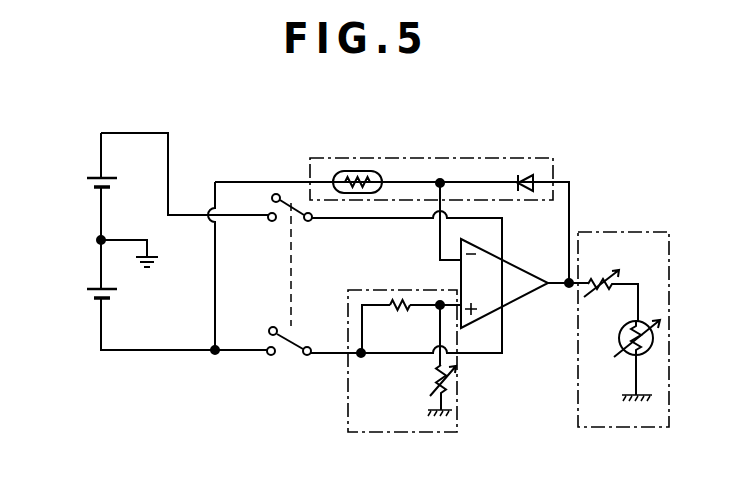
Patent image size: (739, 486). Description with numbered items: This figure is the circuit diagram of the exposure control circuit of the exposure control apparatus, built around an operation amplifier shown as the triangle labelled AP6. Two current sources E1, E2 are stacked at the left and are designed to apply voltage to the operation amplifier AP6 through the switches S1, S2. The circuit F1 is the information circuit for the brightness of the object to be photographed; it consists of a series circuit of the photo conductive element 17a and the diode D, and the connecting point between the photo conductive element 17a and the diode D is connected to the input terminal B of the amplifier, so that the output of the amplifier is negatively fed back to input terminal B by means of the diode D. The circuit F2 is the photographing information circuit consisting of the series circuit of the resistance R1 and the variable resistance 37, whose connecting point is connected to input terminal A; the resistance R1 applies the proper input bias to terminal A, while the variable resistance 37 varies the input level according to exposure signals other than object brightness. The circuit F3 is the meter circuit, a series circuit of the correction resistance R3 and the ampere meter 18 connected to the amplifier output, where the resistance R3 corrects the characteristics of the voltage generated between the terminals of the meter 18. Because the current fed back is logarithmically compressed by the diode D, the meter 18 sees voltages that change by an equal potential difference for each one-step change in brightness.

The current source E1 is at (87, 178).
The current source E2 is at (87, 289).
The switch S1 is at (290, 200).
The switch S2 is at (290, 342).
The photo conductive element 17a is at (358, 170).
The object brightness information circuit F1 is at (468, 158).
The diode D is at (520, 176).
The operational amplifier AP6 is at (517, 291).
The resistance R1 is at (400, 322).
The variable resistance 37 is at (436, 378).
The photographing information circuit F2 is at (436, 432).
The meter circuit F3 is at (630, 232).
The correction resistance R3 is at (611, 285).
The ampere meter 18 is at (620, 338).